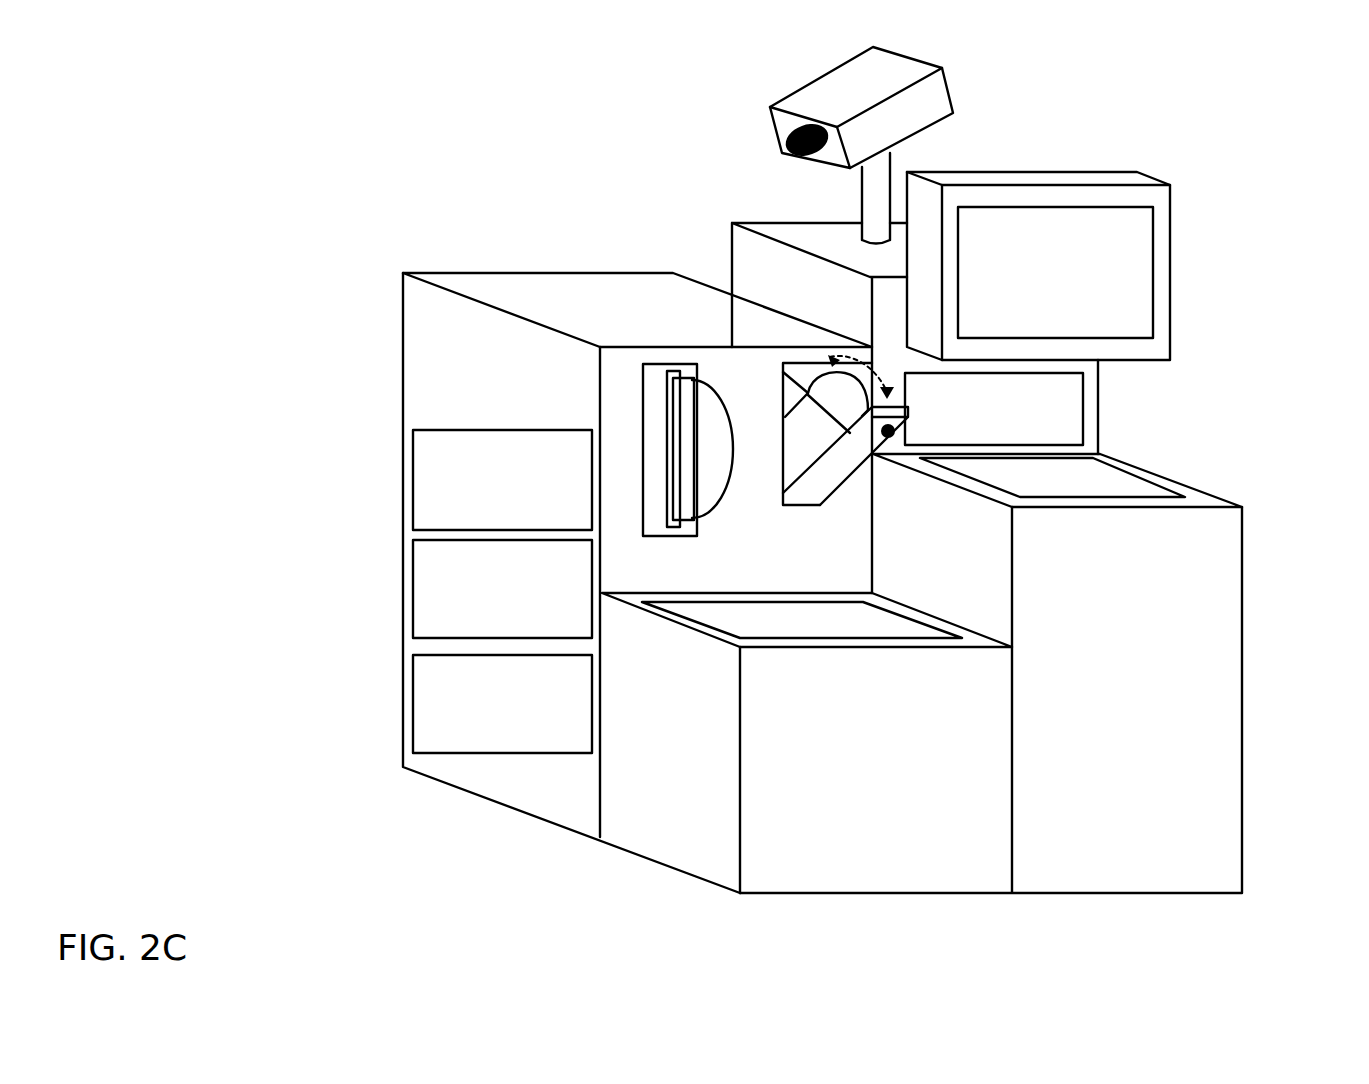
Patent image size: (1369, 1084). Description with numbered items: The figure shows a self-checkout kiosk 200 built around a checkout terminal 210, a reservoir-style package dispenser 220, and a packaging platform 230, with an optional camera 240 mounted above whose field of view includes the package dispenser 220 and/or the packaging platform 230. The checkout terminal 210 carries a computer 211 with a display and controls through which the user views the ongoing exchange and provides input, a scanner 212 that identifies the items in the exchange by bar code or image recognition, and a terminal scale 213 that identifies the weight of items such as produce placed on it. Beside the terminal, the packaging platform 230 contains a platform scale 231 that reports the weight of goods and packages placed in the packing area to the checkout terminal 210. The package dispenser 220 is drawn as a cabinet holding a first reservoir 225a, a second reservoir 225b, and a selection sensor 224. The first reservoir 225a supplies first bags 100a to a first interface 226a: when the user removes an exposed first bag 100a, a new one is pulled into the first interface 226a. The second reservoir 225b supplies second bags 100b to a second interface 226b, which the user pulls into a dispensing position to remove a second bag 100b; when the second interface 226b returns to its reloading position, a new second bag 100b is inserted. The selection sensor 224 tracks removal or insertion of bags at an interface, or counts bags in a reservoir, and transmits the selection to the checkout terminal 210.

The self-checkout kiosk 200 is at (160, 115).
The package dispenser 220 is at (468, 238).
The first reservoir 225a is at (479, 506).
The second reservoir 225b is at (479, 616).
The selection sensor 224 is at (485, 730).
The first interface 226a is at (647, 437).
The second interface 226b is at (837, 475).
The first bag 100a is at (727, 483).
The second bag 100b is at (786, 397).
The camera 240 is at (952, 92).
The computer 211 is at (1170, 278).
The scanner 212 is at (1065, 418).
The terminal scale 213 is at (1123, 473).
The checkout terminal 210 is at (1044, 661).
The packaging platform 230 is at (784, 757).
The platform scale 231 is at (820, 625).